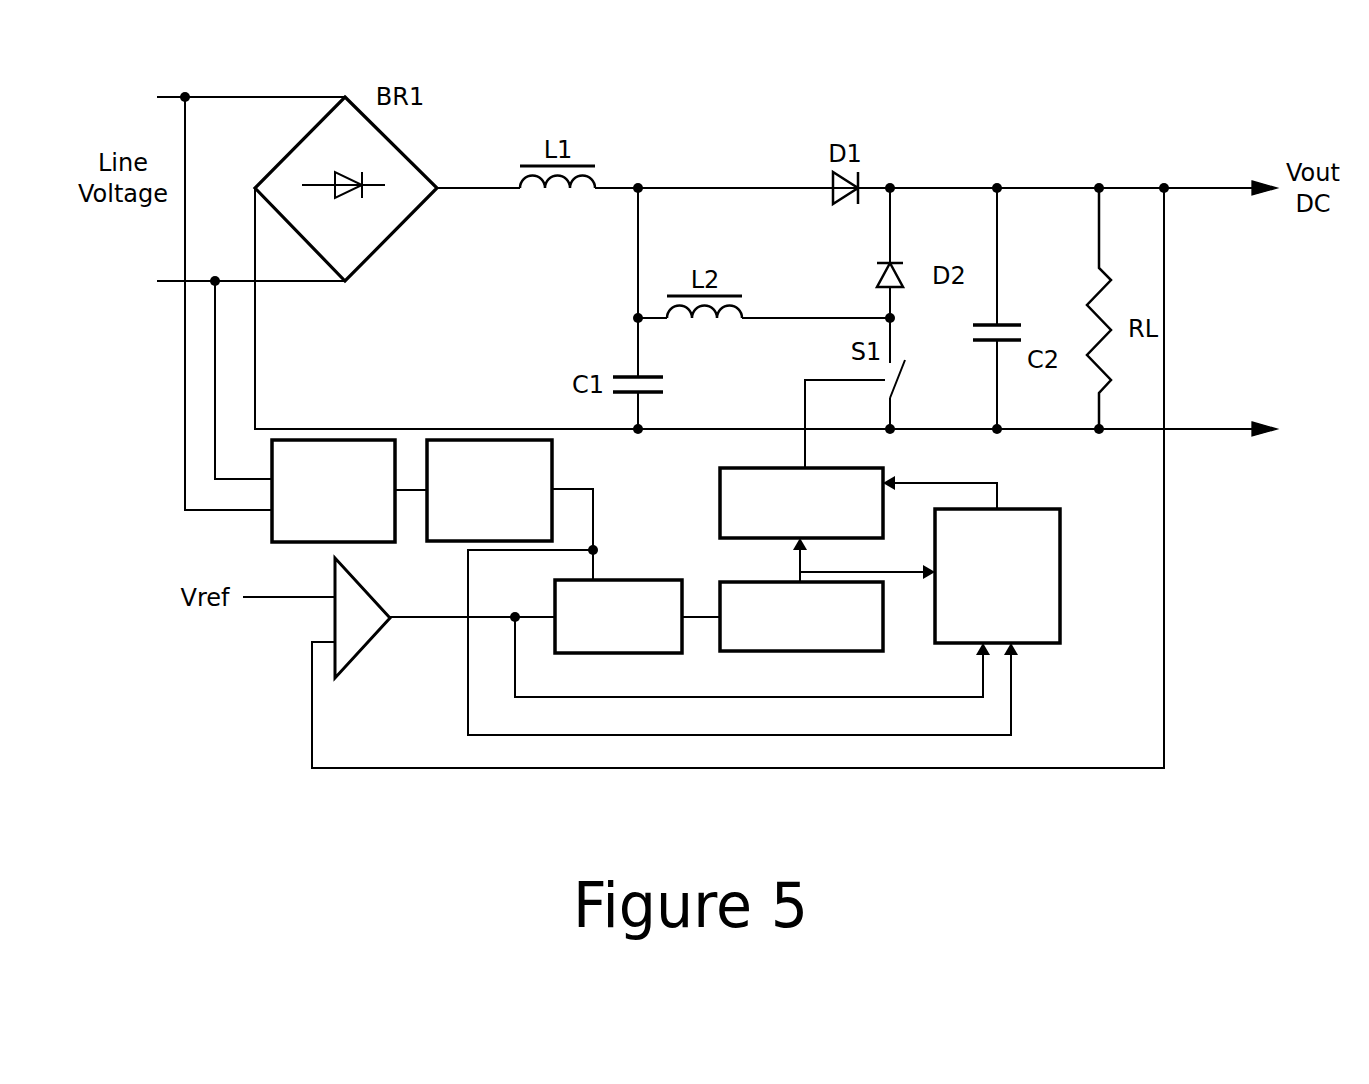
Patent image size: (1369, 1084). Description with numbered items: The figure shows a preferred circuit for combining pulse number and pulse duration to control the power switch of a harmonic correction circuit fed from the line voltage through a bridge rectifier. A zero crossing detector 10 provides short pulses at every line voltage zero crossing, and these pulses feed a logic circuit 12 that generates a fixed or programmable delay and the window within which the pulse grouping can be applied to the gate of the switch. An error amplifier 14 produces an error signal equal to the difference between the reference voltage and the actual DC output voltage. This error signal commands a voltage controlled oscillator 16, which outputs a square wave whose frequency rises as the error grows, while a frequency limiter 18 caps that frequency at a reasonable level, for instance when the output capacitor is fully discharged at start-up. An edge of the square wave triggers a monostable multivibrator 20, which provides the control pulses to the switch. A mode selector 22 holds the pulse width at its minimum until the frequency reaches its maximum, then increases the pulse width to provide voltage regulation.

The zero crossing detector 10 is at (271, 536).
The logic circuit 12 is at (551, 456).
The error amplifier 14 is at (352, 643).
The VCO 16 is at (655, 592).
The frequency limiter 18 is at (872, 646).
The monostable multivibrator 20 is at (721, 485).
The mode selector 22 is at (1045, 524).